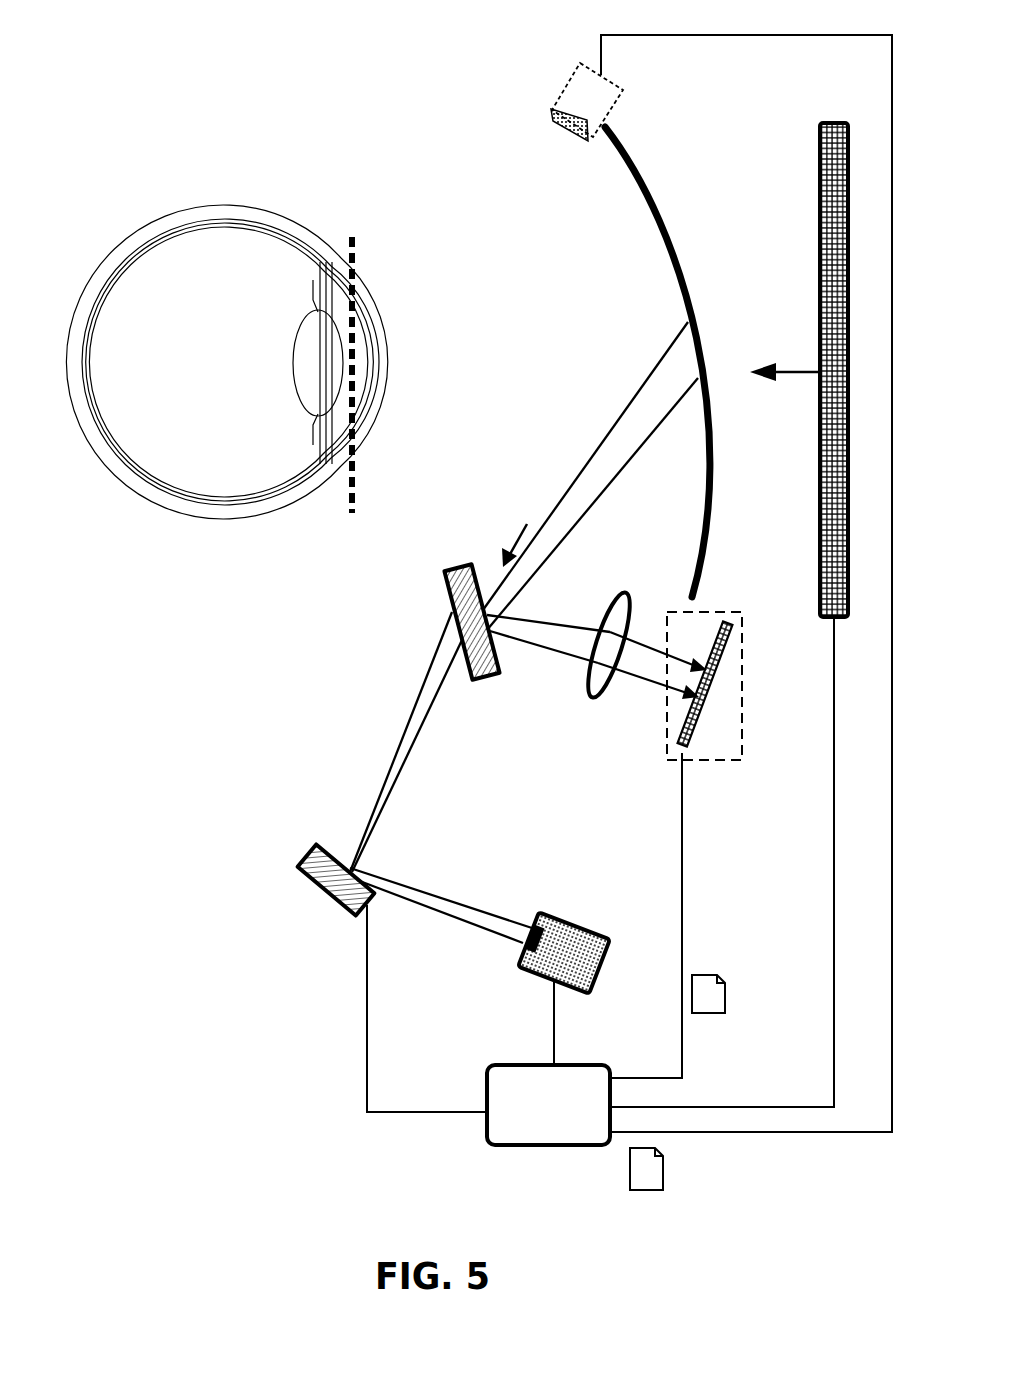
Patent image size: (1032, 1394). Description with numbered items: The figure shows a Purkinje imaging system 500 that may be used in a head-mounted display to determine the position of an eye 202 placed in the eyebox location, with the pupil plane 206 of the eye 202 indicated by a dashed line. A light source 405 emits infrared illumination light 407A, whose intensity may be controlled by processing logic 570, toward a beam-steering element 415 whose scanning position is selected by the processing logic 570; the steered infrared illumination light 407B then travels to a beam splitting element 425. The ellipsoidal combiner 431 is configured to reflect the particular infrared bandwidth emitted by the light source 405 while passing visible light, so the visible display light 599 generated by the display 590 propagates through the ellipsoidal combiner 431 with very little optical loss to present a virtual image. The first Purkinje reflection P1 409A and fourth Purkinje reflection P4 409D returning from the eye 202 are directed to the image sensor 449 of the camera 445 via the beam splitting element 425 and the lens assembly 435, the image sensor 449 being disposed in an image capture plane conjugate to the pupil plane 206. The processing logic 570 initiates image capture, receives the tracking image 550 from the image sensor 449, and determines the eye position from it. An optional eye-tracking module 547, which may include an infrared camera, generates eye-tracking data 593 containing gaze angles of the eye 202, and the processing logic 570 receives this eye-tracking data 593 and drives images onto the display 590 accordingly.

The Purkinje imaging system 500 is at (92, 58).
The eye 202 is at (253, 213).
The pupil plane 206 is at (352, 534).
The eye-tracking module 547 is at (570, 80).
The ellipsoidal combiner 431 is at (635, 148).
The display 590 is at (820, 123).
The visible display light 599 is at (785, 358).
The fourth Purkinje reflection P4 409D is at (660, 361).
The first Purkinje reflection P1 409A is at (610, 476).
The beam splitting element 425 is at (455, 568).
The lens assembly 435 is at (586, 695).
The camera 445 is at (666, 740).
The image sensor 449 is at (682, 721).
The infrared illumination light 407B is at (392, 748).
The beam-steering element 415 is at (296, 866).
The infrared illumination light 407A is at (401, 879).
The light source 405 is at (577, 913).
The processing logic 570 is at (562, 1129).
The tracking image 550 is at (708, 1013).
The eye-tracking data 593 is at (650, 1190).